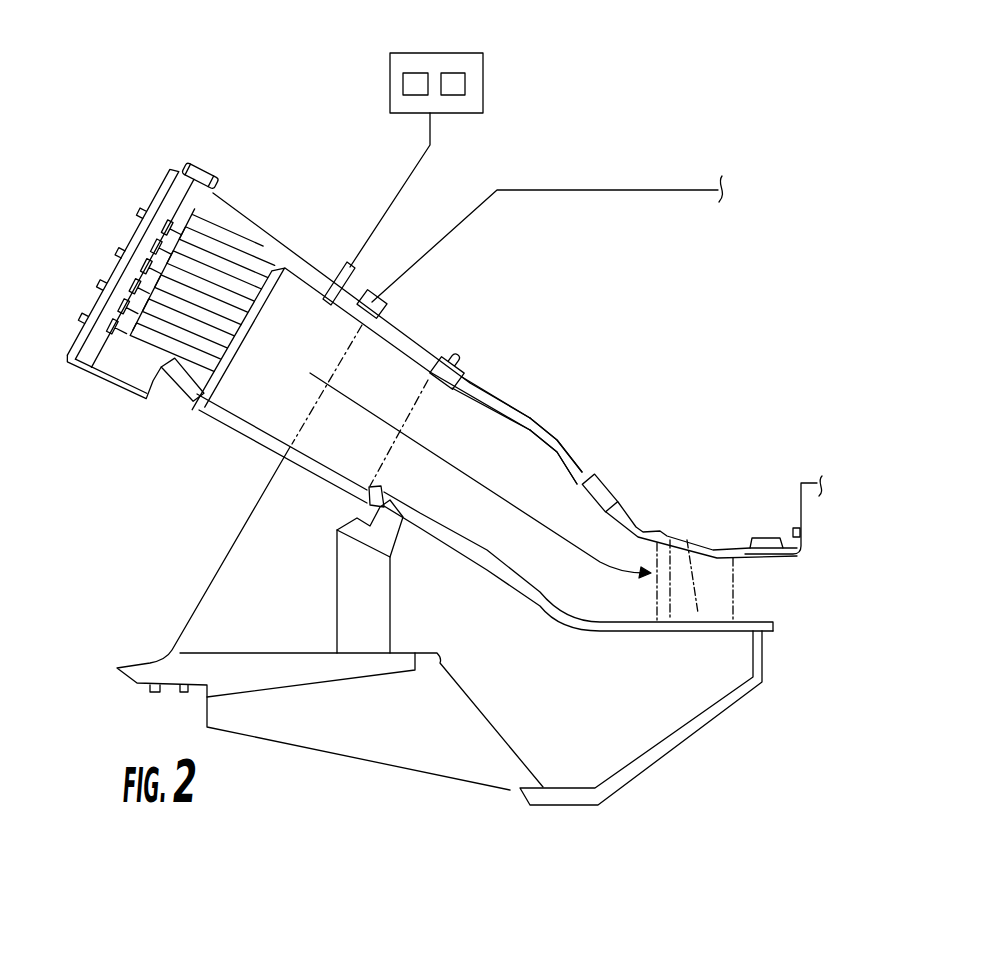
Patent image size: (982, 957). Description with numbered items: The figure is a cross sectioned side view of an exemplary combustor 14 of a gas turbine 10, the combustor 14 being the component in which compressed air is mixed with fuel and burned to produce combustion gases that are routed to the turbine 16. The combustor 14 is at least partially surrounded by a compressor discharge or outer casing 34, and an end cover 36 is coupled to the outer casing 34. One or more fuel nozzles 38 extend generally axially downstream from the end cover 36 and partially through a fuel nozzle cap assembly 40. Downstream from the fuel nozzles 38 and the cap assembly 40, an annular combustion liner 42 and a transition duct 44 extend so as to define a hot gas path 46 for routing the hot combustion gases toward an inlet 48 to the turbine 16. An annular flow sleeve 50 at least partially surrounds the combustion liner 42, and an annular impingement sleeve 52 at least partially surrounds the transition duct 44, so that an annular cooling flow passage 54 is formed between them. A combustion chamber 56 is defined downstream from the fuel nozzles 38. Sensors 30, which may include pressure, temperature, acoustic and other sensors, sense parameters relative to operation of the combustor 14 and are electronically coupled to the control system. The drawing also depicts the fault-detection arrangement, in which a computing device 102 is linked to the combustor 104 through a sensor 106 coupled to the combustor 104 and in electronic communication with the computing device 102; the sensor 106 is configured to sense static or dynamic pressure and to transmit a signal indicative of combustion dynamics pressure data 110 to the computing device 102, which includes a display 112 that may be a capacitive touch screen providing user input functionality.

The gas turbine 10 is at (336, 174).
The combustor 14 is at (182, 339).
The turbine 16 is at (765, 525).
The sensors 30 is at (347, 268).
The outer casing 34 is at (503, 188).
The end cover 36 is at (134, 269).
The fuel nozzles 38 is at (205, 294).
The fuel nozzle cap assembly 40 is at (228, 256).
The combustion liner 42 is at (397, 347).
The transition duct 44 is at (587, 483).
The hot gas path 46 is at (455, 462).
The inlet 48 is at (683, 598).
The flow sleeve 50 is at (443, 365).
The impingement sleeve 52 is at (533, 412).
The cooling flow passage 54 is at (489, 393).
The combustion chamber 56 is at (303, 372).
The computing device 102 is at (432, 66).
The combustor 104 is at (138, 368).
The sensor 106 is at (355, 274).
The combustion dynamics pressure data 110 is at (403, 82).
The display 112 is at (462, 88).